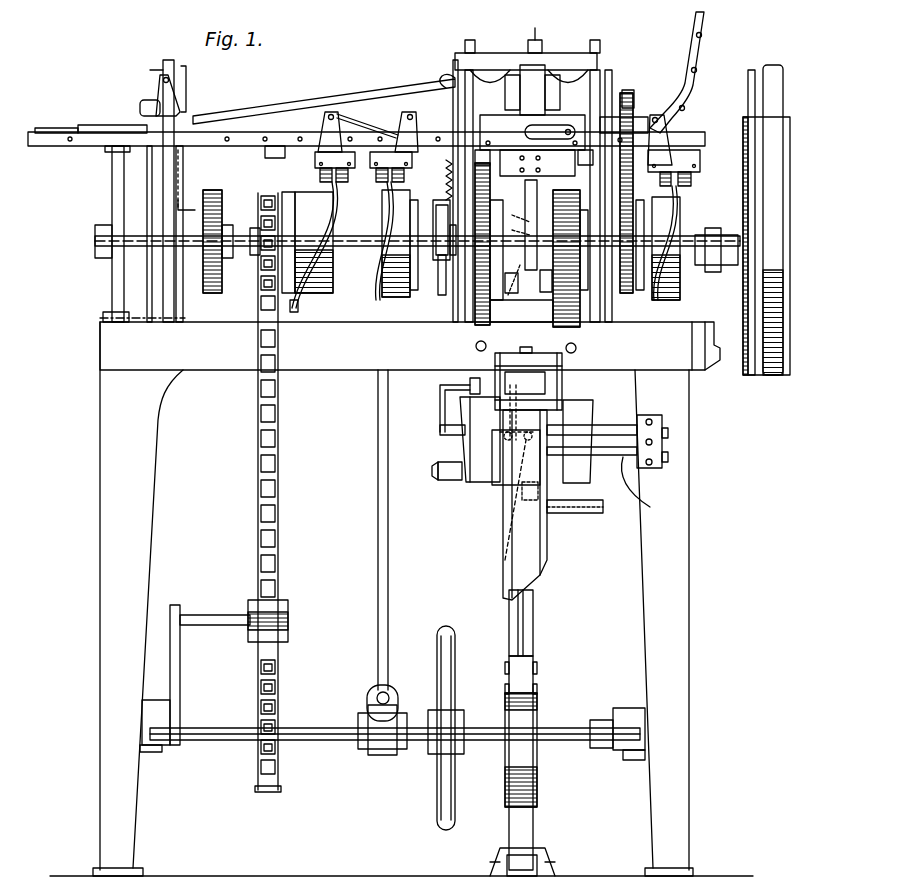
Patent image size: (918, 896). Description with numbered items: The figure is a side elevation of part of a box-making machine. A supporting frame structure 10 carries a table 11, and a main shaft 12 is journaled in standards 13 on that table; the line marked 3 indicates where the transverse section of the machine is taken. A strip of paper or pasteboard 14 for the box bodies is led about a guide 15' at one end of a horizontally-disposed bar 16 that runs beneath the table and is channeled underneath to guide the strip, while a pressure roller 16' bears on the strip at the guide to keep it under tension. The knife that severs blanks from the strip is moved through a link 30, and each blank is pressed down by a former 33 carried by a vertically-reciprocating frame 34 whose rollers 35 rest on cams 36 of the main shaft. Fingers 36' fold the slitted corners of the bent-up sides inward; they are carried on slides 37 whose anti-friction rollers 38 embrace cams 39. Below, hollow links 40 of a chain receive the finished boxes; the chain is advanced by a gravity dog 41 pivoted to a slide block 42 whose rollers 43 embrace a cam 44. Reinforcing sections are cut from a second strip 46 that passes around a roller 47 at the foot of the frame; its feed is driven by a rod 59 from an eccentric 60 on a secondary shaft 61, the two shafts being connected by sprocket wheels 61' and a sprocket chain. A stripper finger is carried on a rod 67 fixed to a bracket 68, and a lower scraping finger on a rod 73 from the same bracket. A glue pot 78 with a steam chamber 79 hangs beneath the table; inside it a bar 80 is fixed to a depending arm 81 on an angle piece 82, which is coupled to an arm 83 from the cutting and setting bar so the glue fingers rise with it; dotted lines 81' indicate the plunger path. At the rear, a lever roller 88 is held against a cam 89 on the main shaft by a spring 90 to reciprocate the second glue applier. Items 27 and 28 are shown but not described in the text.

The section line 3— 3 is at (534, 27).
The supporting frame structure 10 is at (106, 452).
The table 11 is at (410, 344).
The main shaft 12 is at (96, 244).
The standards 13 is at (112, 292).
The strip of paper or pasteboard 14 is at (505, 575).
The guide 15' is at (575, 523).
The horizontally-disposed bar 16 is at (506, 378).
The pressure roller 16' is at (585, 428).
The fly wheel 27 is at (766, 220).
The bearing block 28 is at (521, 324).
The link 30 is at (528, 272).
The former 33 is at (535, 95).
The vertically-reciprocating frame 34 is at (492, 53).
The rollers 35 is at (462, 110).
The cams 36 is at (521, 262).
The fingers 36' is at (527, 162).
The slides 37 is at (405, 112).
The anti-friction rollers 38 is at (704, 186).
The cams 39 is at (378, 302).
The hollow links 40 is at (55, 130).
The reciprocating gravity dog 41 is at (348, 112).
The slide block 42 is at (330, 160).
The anti-friction rollers 43 is at (330, 176).
The cam 44 is at (295, 308).
The strip 46 is at (535, 600).
The roller 47 is at (537, 848).
The rod 59 is at (534, 623).
The eccentric 60 is at (537, 708).
The secondary shaft 61 is at (392, 600).
The sprocket wheels 61' is at (248, 492).
The rod 67 is at (623, 427).
The bracket 68 is at (662, 442).
The rod 73 is at (646, 490).
The glue pot 78 is at (487, 447).
The steam chamber 79 is at (491, 478).
The horizontally-disposed bar 80 is at (470, 445).
The arm 81 is at (470, 412).
The plunger rod 81' is at (503, 506).
The angle piece 82 is at (440, 390).
The arm 83 is at (440, 435).
The roller 88 is at (436, 220).
The cam 89 is at (440, 290).
The spring 90 is at (446, 168).